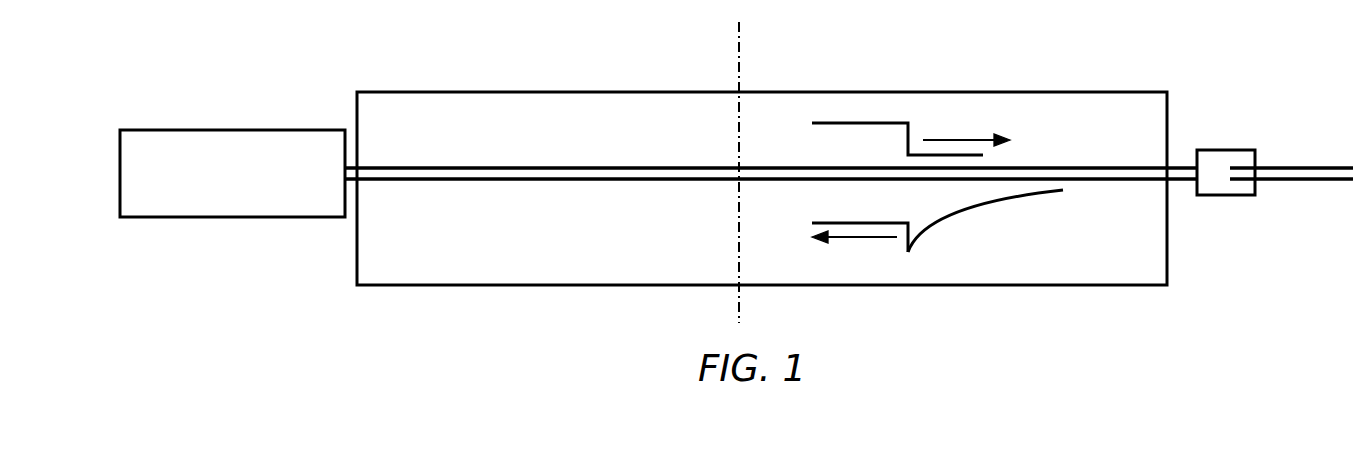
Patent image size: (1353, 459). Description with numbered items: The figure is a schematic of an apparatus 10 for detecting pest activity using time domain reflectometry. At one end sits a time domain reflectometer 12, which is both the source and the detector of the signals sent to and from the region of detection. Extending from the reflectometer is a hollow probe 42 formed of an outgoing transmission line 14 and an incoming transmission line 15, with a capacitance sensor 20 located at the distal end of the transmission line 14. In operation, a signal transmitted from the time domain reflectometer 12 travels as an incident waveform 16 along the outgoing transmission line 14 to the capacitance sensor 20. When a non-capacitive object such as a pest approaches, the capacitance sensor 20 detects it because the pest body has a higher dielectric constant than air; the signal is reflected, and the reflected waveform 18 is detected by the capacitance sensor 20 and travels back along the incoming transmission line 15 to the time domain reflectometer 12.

The apparatus 10 is at (517, 38).
The time domain reflectometer 12 is at (265, 217).
The outgoing transmission line 14 is at (570, 166).
The incoming transmission line 15 is at (668, 178).
The incident waveform 16 is at (887, 123).
The reflected waveform 18 is at (910, 253).
The capacitance sensor 20 is at (1225, 195).
The hollow probe 42 is at (1023, 92).